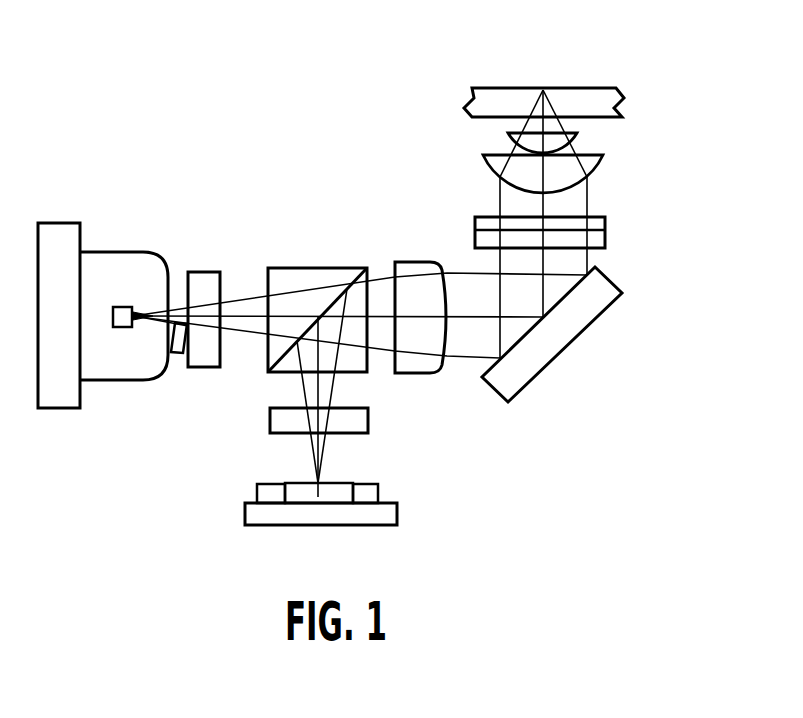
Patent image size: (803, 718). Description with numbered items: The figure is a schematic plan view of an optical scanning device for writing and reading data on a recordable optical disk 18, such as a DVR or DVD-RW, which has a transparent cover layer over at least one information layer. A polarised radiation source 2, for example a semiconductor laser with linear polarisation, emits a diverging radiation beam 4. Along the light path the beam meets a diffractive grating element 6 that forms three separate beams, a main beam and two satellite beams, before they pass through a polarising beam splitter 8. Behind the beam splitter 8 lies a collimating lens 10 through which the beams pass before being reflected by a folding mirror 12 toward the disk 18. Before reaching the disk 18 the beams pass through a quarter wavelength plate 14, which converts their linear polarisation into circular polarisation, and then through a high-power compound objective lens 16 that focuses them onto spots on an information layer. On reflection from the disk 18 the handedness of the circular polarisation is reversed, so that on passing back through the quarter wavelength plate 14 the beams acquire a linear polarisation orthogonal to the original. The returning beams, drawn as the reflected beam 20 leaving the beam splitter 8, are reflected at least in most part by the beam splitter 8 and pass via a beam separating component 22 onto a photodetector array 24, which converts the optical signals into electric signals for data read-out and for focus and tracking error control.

The polarised radiation source 2 is at (126, 252).
The diverging radiation beam 4 is at (177, 356).
The diffractive grating element 6 is at (208, 272).
The polarising beam splitter 8 is at (318, 268).
The collimating lens 10 is at (417, 262).
The folding mirror 12 is at (597, 317).
The quarter wavelength plate 14 is at (605, 225).
The compound objective lens 16 is at (577, 133).
The recordable optical disk 18 is at (592, 88).
The return beam 20 is at (312, 388).
The beam separating component 22 is at (368, 420).
The photodetector array 24 is at (378, 490).